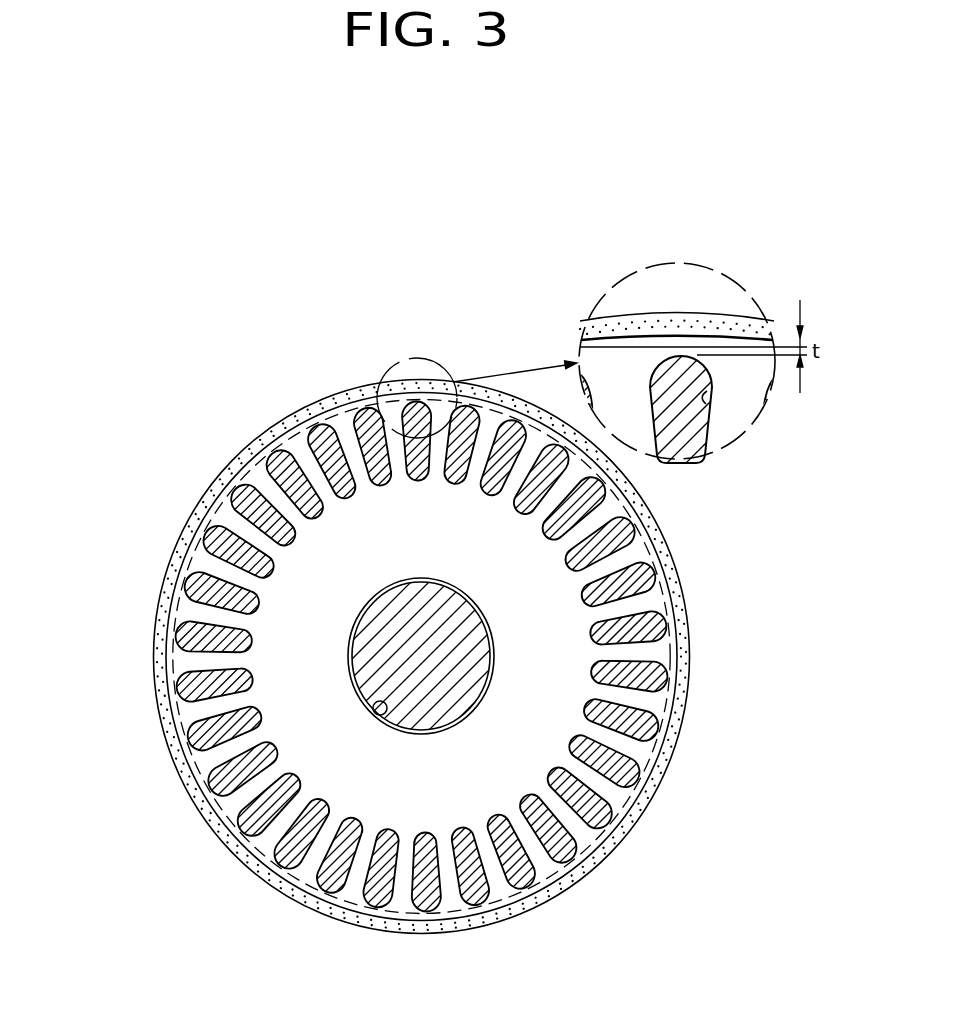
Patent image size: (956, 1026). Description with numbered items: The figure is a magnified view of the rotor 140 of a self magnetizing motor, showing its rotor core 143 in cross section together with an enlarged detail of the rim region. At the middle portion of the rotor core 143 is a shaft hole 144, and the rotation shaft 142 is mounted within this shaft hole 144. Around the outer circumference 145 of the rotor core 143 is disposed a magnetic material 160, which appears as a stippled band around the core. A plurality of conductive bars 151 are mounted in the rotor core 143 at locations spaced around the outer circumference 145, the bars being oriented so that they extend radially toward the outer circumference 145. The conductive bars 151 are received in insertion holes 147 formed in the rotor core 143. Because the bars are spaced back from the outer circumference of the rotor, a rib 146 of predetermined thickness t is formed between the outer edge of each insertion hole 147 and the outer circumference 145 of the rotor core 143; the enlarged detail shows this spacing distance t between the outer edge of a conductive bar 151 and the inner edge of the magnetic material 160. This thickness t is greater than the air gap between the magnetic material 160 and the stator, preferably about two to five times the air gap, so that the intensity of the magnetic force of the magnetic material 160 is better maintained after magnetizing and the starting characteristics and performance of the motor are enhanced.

The rotor 140 is at (179, 451).
The rotation shaft 142 is at (375, 675).
The rotor core 143 is at (300, 622).
The shaft hole 144 is at (375, 709).
The outer circumference 145 is at (601, 343).
The rib 146 is at (676, 350).
The insertion hole 147 is at (708, 396).
The conductive bar 151 is at (657, 728).
The magnetic material 160 is at (638, 820).